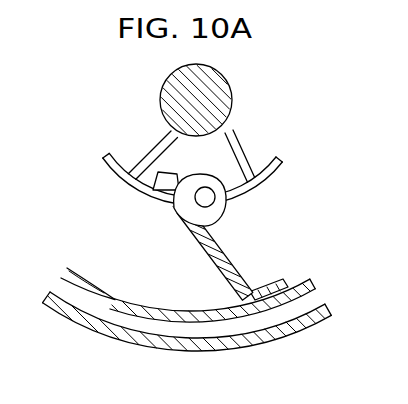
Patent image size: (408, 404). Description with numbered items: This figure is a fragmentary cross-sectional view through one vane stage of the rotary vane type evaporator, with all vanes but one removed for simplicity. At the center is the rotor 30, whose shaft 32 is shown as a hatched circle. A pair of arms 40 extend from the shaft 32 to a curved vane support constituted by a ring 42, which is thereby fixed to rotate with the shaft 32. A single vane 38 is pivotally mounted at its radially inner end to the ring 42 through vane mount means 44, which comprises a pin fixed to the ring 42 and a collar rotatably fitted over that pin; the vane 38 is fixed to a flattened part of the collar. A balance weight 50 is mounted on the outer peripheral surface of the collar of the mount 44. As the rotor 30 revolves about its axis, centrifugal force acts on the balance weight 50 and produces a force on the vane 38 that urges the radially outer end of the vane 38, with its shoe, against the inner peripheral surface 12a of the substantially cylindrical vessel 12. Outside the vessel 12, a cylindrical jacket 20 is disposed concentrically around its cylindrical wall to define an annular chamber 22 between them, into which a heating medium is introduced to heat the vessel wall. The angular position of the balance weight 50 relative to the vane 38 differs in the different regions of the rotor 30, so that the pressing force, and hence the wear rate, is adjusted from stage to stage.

The rotor 30 is at (146, 101).
The shaft 32 is at (230, 101).
The arms 40 is at (157, 138).
The ring 42 is at (121, 178).
The balance weight 50 is at (180, 166).
The vane mount means 44 is at (221, 218).
The vane 38 is at (243, 258).
The vessel 12 is at (113, 297).
The inner peripheral surface 12a is at (170, 308).
The annular chamber 22 is at (62, 285).
The cylindrical jacket 20 is at (97, 333).